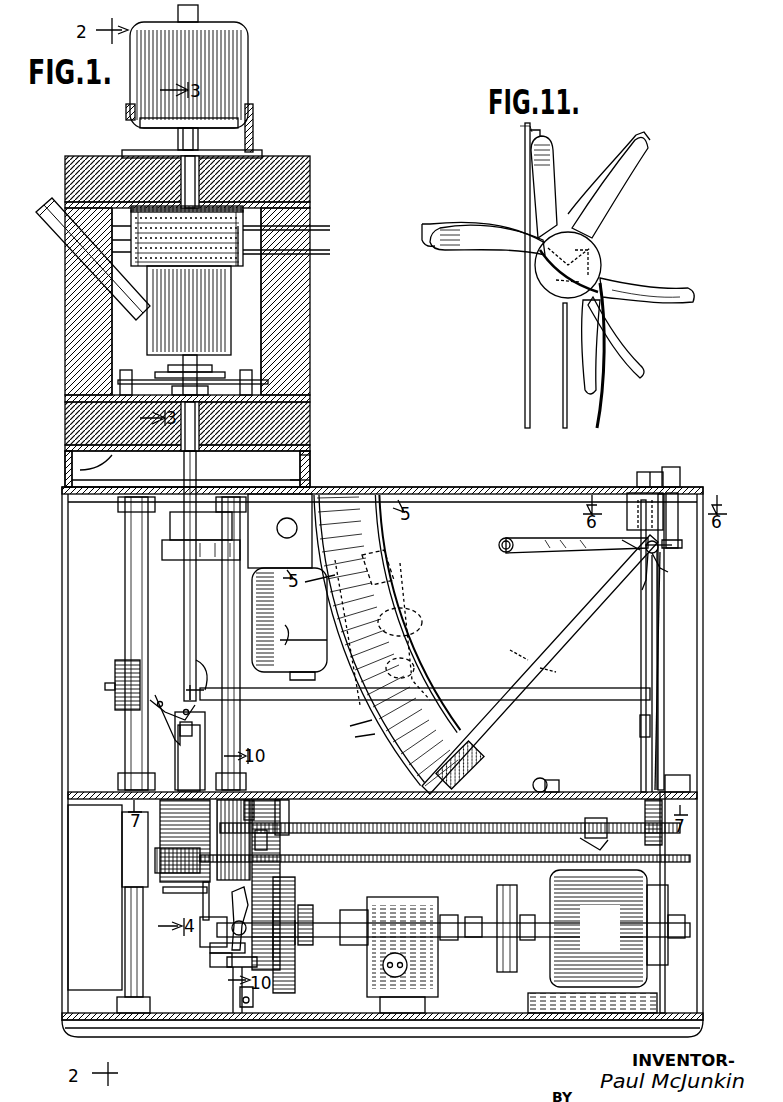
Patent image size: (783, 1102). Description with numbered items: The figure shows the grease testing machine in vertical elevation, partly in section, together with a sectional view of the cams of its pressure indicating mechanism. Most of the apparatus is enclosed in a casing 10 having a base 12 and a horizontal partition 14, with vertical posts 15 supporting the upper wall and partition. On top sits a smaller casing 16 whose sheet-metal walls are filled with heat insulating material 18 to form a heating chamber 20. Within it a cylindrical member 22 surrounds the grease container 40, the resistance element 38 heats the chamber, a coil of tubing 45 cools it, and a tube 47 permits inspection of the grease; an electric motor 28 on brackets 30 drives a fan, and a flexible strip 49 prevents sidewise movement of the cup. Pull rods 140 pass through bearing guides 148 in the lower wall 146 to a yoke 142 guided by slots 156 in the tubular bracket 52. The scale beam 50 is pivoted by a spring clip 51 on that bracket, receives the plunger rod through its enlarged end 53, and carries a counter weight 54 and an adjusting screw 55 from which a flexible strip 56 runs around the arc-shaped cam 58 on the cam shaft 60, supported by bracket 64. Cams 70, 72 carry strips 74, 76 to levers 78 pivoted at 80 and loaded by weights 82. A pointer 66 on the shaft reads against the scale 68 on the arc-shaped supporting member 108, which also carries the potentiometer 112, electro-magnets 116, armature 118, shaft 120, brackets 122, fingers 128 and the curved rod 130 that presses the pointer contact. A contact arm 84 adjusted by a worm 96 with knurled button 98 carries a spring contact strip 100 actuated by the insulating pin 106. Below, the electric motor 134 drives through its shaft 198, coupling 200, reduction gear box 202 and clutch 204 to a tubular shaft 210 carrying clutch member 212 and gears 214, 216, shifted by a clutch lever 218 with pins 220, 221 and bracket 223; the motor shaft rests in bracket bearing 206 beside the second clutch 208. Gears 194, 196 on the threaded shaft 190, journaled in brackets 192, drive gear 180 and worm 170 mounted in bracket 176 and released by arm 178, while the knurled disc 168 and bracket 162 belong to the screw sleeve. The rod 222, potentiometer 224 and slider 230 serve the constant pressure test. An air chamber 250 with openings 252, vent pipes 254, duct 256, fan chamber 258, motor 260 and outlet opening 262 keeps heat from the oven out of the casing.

In FIG. 1, the casing 10 is at (415, 493).
In FIG. 1, the base 12 is at (330, 1022).
In FIG. 1, the horizontal partition 14 is at (500, 792).
In FIG. 1, the vertical posts 15 is at (125, 603).
In FIG. 1, the smaller casing 16 is at (310, 318).
In FIG. 1, the heat insulating material 18 is at (66, 181).
In FIG. 1, the heating chamber 20 is at (126, 336).
In FIG. 1, the cylindrical member 22 is at (225, 316).
In FIG. 1, the electric motor 28 is at (248, 53).
In FIG. 1, the brackets 30 is at (253, 133).
In FIG. 1, the electrical resistance element 38 is at (205, 258).
In FIG. 1, the grease container 40 is at (168, 358).
In FIG. 1, the coil of tubing 45 is at (243, 262).
In FIG. 1, the tube 47 is at (55, 250).
In FIG. 1, the metallic strip 49 is at (240, 378).
In FIG. 1, the scale beam 50 is at (482, 680).
In FIG. 1, the spring clip 51 is at (160, 700).
In FIG. 1, the bracket 52 is at (170, 735).
In FIG. 1, the enlarged end 53 is at (205, 660).
In FIG. 1, the counter weight 54 is at (115, 672).
In FIG. 1, the adjusting screw 55 is at (640, 722).
In FIG. 1, the flexible strip 56 is at (660, 617).
In FIG. 11, the flexible strip 56 is at (602, 421).
In FIG. 1, the arc-shaped cam 58 is at (630, 540).
In FIG. 11, the arc-shaped cam 58 is at (484, 245).
In FIG. 11, the cam shaft 60 is at (601, 245).
In FIG. 1, the bracket 64 is at (640, 500).
In FIG. 1, the pointer 66 is at (572, 620).
In FIG. 1, the scale 68 is at (310, 530).
In FIG. 1, the arc-shaped cam 70 is at (668, 572).
In FIG. 11, the arc-shaped cam 70 is at (645, 365).
In FIG. 1, the arc-shaped cam 72 is at (680, 553).
In FIG. 11, the arc-shaped cam 72 is at (692, 300).
In FIG. 1, the flexible strip 74 is at (651, 625).
In FIG. 11, the flexible strip 74 is at (563, 375).
In FIG. 1, the flexible strip 76 is at (641, 618).
In FIG. 11, the flexible strip 76 is at (525, 395).
In FIG. 1, the levers 78 is at (580, 788).
In FIG. 1, the pivot 80 is at (546, 780).
In FIG. 1, the weight 82 is at (676, 775).
In FIG. 1, the contact arm 84 is at (540, 553).
In FIG. 1, the worm 96 is at (672, 540).
In FIG. 1, the knurled adjusting button 98 is at (680, 470).
In FIG. 1, the spring contact strip 100 is at (515, 532).
In FIG. 1, the insulating pin 106 is at (531, 654).
In FIG. 1, the scale supporting member 108 is at (392, 504).
In FIG. 1, the potentiometer 112 is at (356, 705).
In FIG. 1, the electro-magnets 116 is at (410, 620).
In FIG. 1, the armature 118 is at (408, 690).
In FIG. 1, the shaft 120 is at (394, 573).
In FIG. 1, the brackets 122 is at (410, 555).
In FIG. 1, the fingers 128 is at (305, 575).
In FIG. 1, the curved rod 130 is at (350, 727).
In FIG. 1, the electric motor 134 is at (578, 900).
In FIG. 1, the pull rods 140 is at (200, 478).
In FIG. 1, the yoke 142 is at (178, 725).
In FIG. 1, the lower wall 146 is at (94, 464).
In FIG. 1, the bearing guides 148 is at (196, 380).
In FIG. 1, the longitudinal slots 156 is at (200, 750).
In FIG. 1, the bracket 162 is at (122, 846).
In FIG. 1, the knurled disc 168 is at (180, 893).
In FIG. 1, the worm 170 is at (150, 868).
In FIG. 1, the bracket 176 is at (258, 800).
In FIG. 1, the arm 178 is at (203, 908).
In FIG. 1, the gear 180 is at (245, 862).
In FIG. 1, the shaft 190 is at (390, 905).
In FIG. 1, the brackets 192 is at (280, 800).
In FIG. 1, the gear 194 is at (262, 800).
In FIG. 1, the gear 196 is at (282, 880).
In FIG. 1, the motor shaft 198 is at (470, 915).
In FIG. 1, the coupling 200 is at (507, 972).
In FIG. 1, the reduction gear box 202 is at (418, 897).
In FIG. 1, the clutch 204 is at (296, 950).
In FIG. 1, the bracket bearing 206 is at (212, 957).
In FIG. 1, the second clutch 208 is at (208, 924).
In FIG. 1, the tubular shaft 210 is at (260, 940).
In FIG. 1, the clutch member 212 is at (246, 907).
In FIG. 1, the gear 214 is at (295, 965).
In FIG. 1, the gear 216 is at (295, 978).
In FIG. 1, the clutch lever 218 is at (313, 906).
In FIG. 1, the pin 220 is at (210, 947).
In FIG. 1, the pin 221 is at (232, 978).
In FIG. 1, the rod 222 is at (428, 823).
In FIG. 1, the bracket 223 is at (228, 964).
In FIG. 1, the potentiometer 224 is at (488, 824).
In FIG. 1, the slider 230 is at (598, 828).
In FIG. 1, the air chamber 250 is at (312, 458).
In FIG. 1, the openings 252 is at (65, 463).
In FIG. 1, the vent pipes 254 is at (182, 530).
In FIG. 1, the duct 256 is at (165, 561).
In FIG. 1, the fan chamber 258 is at (306, 476).
In FIG. 1, the electric motor 260 is at (290, 672).
In FIG. 1, the opening 262 is at (277, 525).